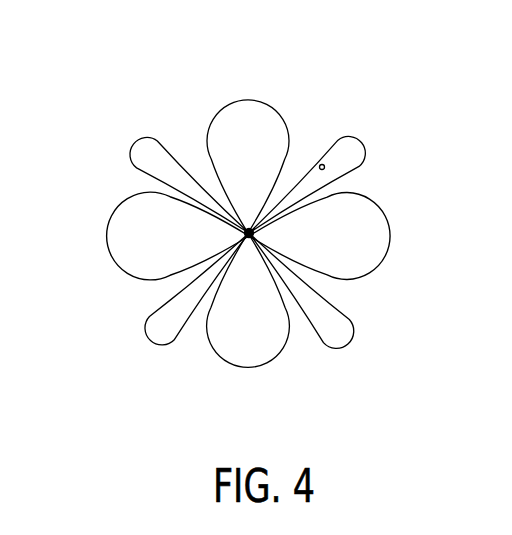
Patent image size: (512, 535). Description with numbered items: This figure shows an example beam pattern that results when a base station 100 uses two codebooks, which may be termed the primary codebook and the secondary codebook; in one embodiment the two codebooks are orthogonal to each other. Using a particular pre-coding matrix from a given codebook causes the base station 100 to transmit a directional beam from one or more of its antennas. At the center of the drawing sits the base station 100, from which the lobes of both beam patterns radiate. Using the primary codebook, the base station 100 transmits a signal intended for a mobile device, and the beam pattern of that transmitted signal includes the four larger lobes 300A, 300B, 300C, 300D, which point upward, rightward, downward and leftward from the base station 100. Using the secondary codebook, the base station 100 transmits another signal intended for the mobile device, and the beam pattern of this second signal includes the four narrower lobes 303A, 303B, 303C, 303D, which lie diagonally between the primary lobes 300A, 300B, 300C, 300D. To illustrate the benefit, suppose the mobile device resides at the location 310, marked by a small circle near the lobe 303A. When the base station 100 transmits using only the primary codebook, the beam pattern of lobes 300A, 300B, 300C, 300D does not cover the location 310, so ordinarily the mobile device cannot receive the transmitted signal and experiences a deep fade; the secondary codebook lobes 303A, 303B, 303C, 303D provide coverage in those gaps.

The base station 100 is at (245, 233).
The lobe 300A is at (261, 115).
The lobe 300B is at (386, 228).
The lobe 300C is at (251, 353).
The lobe 300D is at (122, 255).
The lobe 303A is at (360, 160).
The lobe 303B is at (344, 337).
The lobe 303C is at (162, 325).
The lobe 303D is at (147, 153).
The location 310 is at (322, 167).